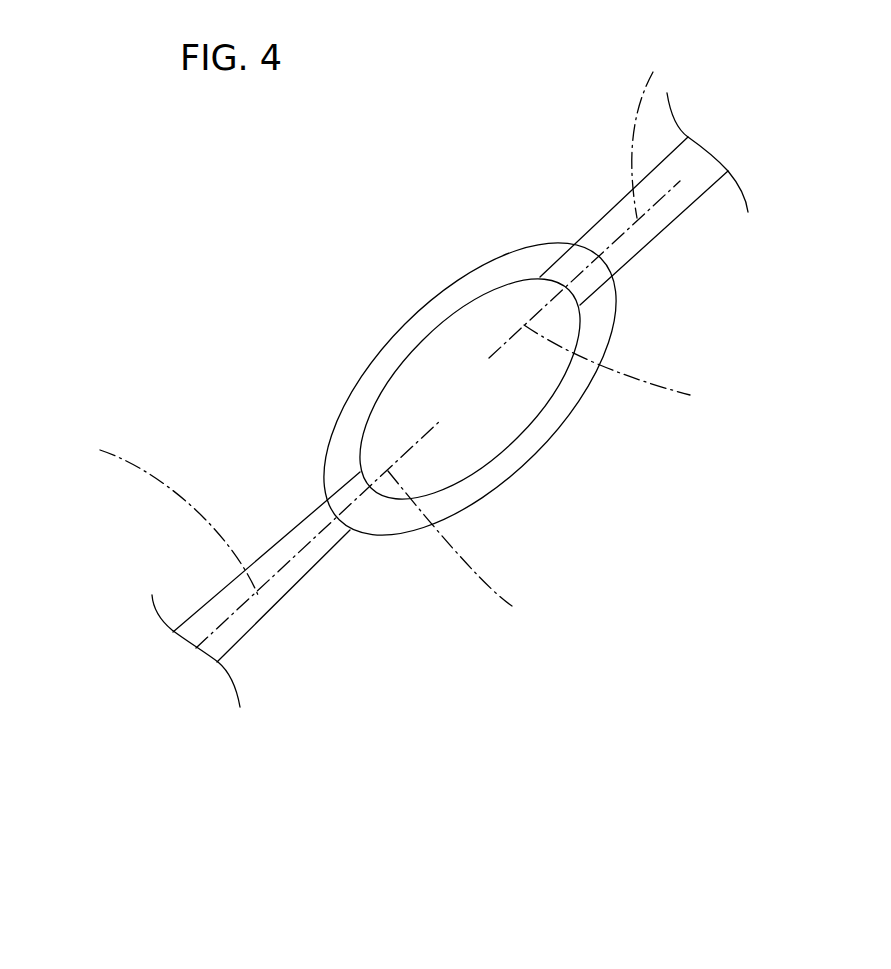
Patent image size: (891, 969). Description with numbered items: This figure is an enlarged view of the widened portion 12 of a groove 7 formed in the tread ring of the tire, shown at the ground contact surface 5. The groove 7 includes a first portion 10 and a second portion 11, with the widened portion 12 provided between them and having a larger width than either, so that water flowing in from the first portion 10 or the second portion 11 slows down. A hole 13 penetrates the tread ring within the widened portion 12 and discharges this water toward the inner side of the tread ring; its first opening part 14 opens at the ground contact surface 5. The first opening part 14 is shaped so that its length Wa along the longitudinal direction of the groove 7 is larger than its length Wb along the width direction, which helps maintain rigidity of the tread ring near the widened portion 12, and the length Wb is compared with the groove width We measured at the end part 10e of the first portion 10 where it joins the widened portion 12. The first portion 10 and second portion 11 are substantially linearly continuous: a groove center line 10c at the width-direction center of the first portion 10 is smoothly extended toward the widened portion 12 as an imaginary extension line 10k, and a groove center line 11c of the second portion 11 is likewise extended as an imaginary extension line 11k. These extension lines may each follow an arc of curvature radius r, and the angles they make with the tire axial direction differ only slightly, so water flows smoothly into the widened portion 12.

The ground contact surface 5 is at (584, 144).
The groove 7 is at (690, 225).
The second portion 11 is at (690, 183).
The groove center line 11c is at (655, 130).
The imaginary extension line 11k is at (690, 395).
The widened portion 12 is at (615, 327).
The hole 13 is at (522, 389).
The first opening part 14 is at (567, 395).
The first portion 10 is at (209, 620).
The groove center line 10c is at (158, 513).
The end part 10e is at (343, 550).
The imaginary extension line 10k is at (512, 606).
The curvature radius r is at (657, 202).
The length of the first opening part along the longitudinal direction Wa is at (327, 502).
The length of the first opening part along the width direction Wb is at (507, 477).
The width of the groove at the end part We is at (327, 502).